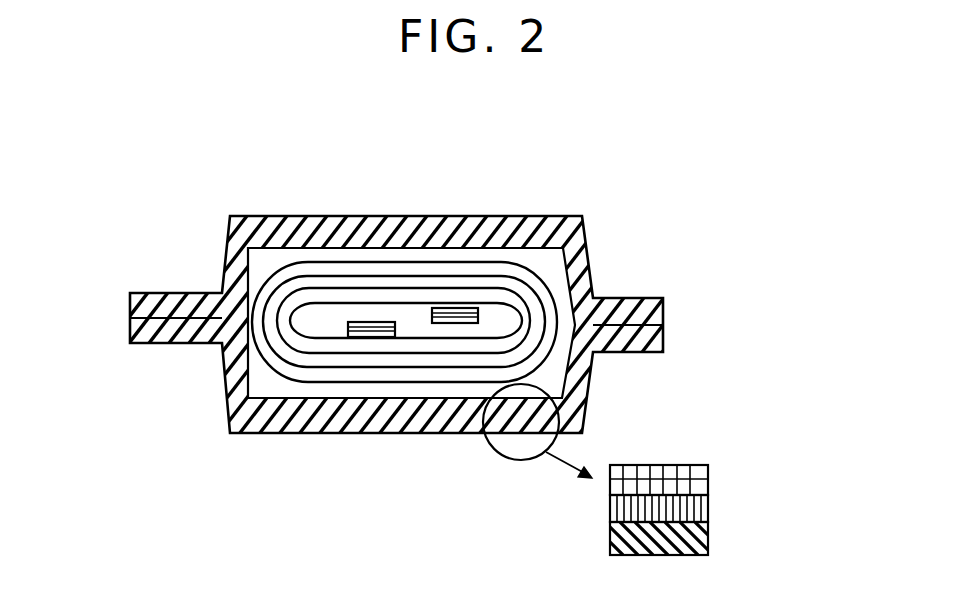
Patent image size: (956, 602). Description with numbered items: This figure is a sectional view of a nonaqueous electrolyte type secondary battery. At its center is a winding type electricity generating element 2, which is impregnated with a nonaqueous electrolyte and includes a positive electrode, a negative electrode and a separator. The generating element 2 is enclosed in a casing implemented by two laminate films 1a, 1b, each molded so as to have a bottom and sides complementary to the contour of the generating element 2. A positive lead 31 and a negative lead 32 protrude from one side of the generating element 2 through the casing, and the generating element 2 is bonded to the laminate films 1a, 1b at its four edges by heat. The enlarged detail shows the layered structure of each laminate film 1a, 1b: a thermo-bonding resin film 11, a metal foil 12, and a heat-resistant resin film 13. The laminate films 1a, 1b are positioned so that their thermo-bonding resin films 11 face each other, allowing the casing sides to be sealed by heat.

The laminate film 1a is at (590, 257).
The laminate film 1b is at (225, 388).
The electricity generating element 2 is at (460, 358).
The positive lead 31 is at (464, 308).
The negative lead 32 is at (378, 337).
The thermo-bonding resin film 11 is at (710, 480).
The metal foil 12 is at (710, 505).
The heat-resistant resin film 13 is at (710, 530).